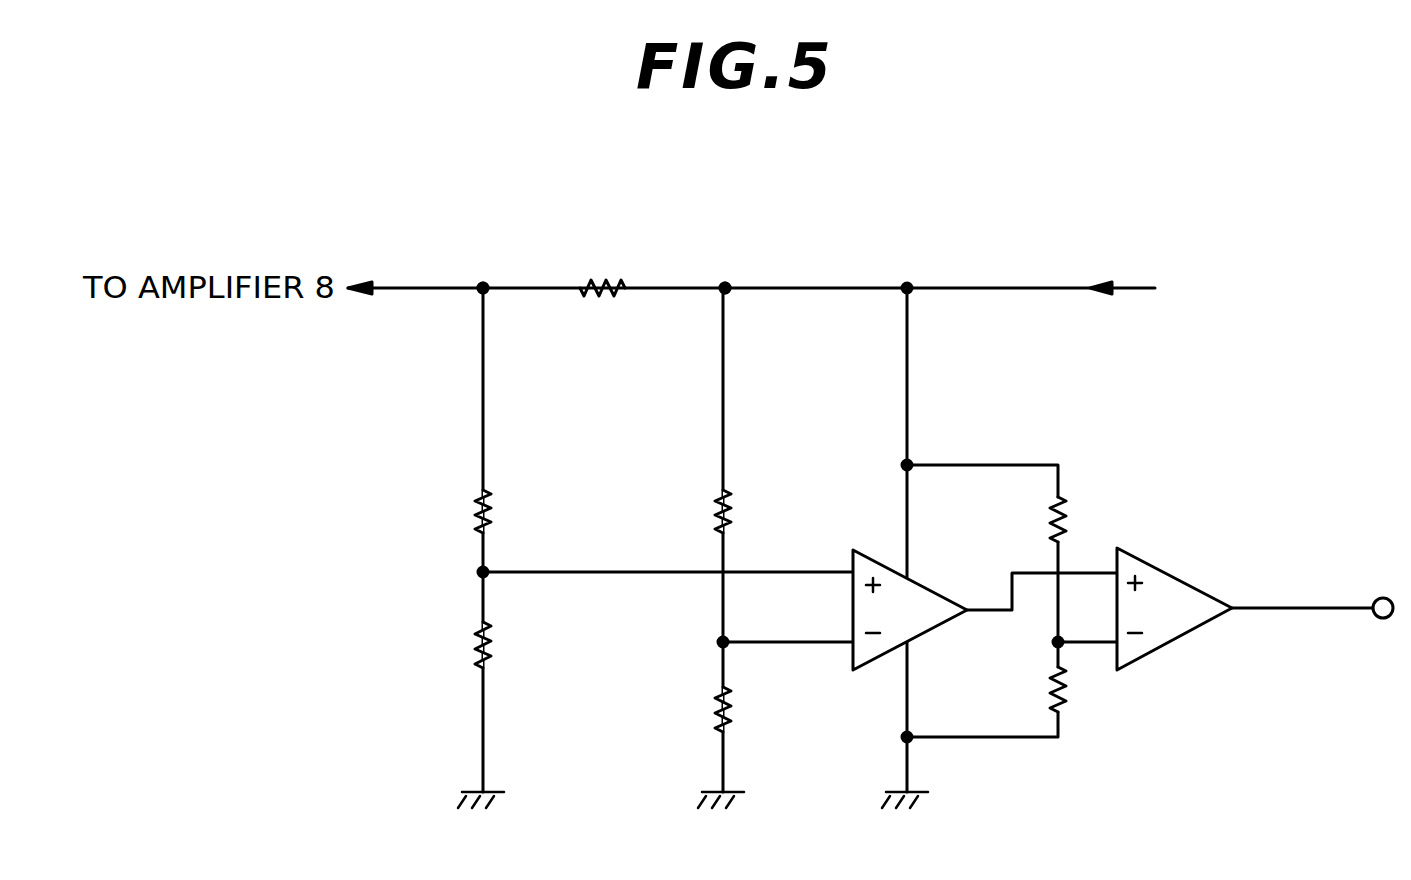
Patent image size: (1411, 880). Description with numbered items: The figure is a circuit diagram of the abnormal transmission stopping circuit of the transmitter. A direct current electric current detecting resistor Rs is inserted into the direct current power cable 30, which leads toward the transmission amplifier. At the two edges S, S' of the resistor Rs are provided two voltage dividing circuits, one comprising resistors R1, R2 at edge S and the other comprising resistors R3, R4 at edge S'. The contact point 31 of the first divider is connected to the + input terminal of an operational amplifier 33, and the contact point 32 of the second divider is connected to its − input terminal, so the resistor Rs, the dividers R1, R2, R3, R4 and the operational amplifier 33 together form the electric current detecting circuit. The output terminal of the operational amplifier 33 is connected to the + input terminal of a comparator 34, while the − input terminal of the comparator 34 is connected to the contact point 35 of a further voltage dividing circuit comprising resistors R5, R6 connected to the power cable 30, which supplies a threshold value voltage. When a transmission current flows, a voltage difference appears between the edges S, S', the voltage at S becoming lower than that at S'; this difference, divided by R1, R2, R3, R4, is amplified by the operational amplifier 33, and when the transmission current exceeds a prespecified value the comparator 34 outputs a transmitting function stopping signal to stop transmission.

The direct current power cable 30 is at (1015, 288).
The contact point 31 is at (487, 571).
The contact point 32 is at (718, 642).
The operational amplifier 33 is at (854, 550).
The comparator 34 is at (1183, 583).
The contact point 35 is at (1054, 642).
The edge of resistor Rs S is at (488, 233).
The edge of resistor Rs S' is at (732, 233).
The electric current detecting resistor Rs is at (598, 282).
The resistor R1 is at (460, 512).
The resistor R2 is at (460, 644).
The resistor R3 is at (712, 505).
The resistor R4 is at (700, 708).
The resistor R5 is at (1042, 518).
The resistor R6 is at (1040, 695).